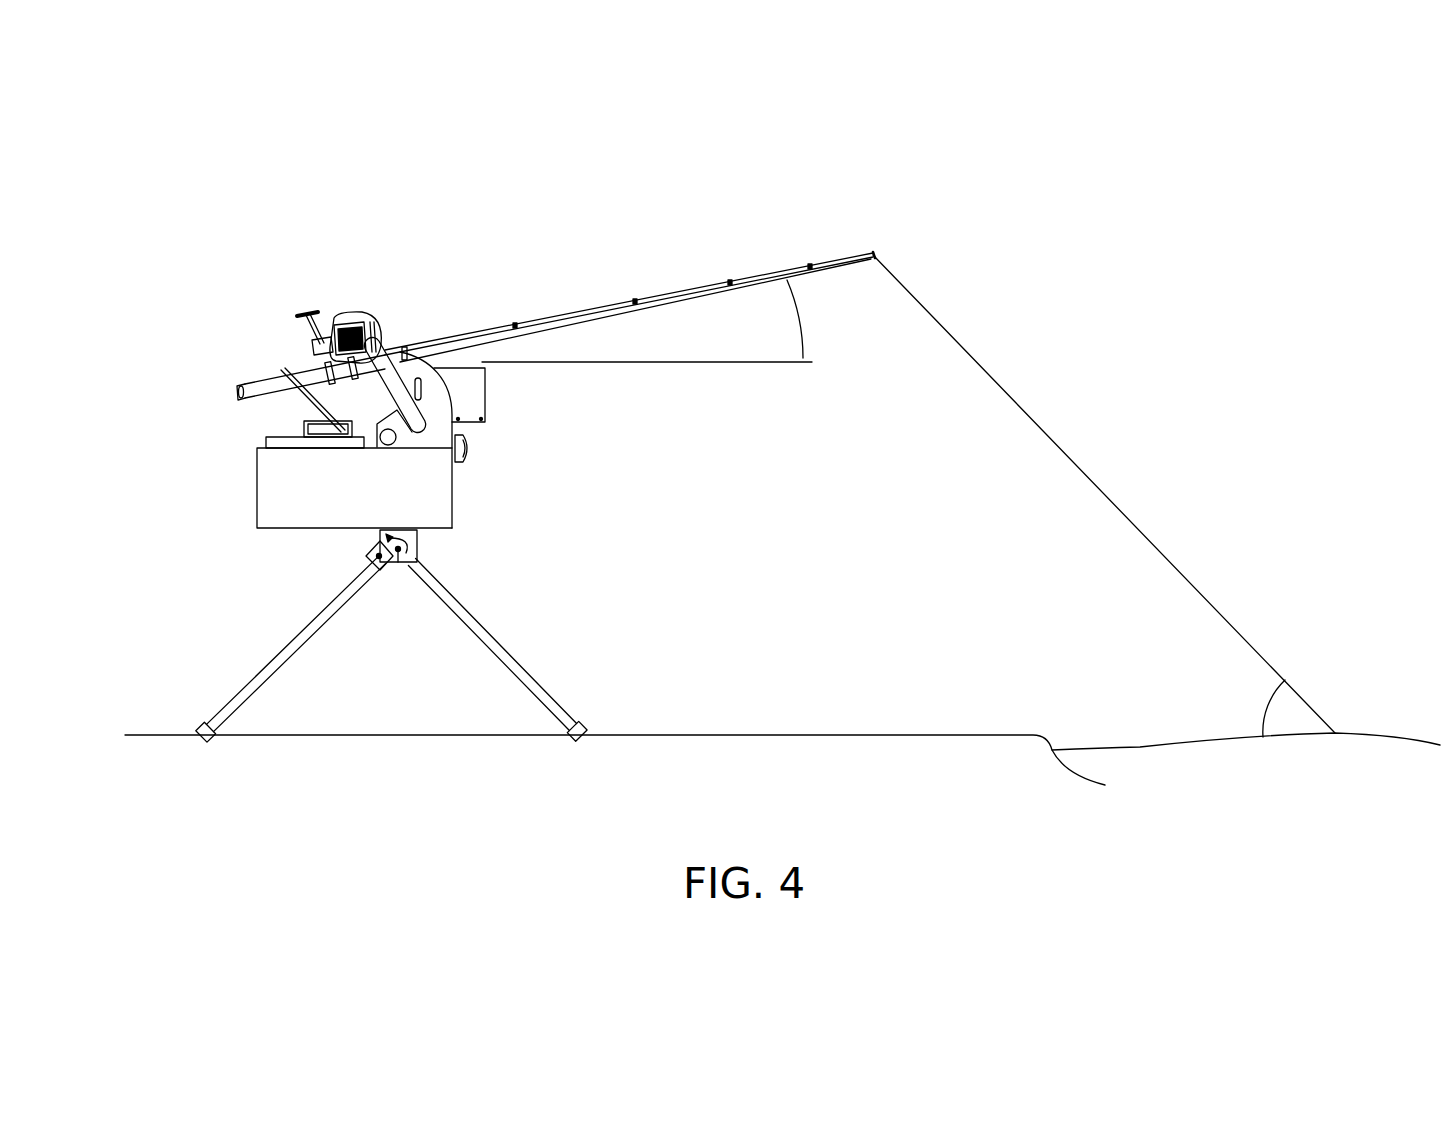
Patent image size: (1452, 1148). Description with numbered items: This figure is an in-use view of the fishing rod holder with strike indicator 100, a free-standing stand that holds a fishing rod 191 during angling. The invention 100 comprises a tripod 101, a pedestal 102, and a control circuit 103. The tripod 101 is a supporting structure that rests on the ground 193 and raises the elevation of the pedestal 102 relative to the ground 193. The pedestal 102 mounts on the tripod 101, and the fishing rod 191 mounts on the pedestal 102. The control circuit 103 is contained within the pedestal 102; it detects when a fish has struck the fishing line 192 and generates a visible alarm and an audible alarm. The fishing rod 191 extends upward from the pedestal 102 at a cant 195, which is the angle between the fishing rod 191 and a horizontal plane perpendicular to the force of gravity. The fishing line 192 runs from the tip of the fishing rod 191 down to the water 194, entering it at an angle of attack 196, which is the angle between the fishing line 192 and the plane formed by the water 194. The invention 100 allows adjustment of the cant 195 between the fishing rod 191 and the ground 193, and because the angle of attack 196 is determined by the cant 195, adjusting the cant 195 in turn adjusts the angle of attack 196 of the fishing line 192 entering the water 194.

The fishing rod holder with strike indicator 100 is at (349, 186).
The tripod 101 is at (292, 640).
The pedestal 102 is at (280, 476).
The control circuit 103 is at (470, 393).
The fishing rod 191 is at (767, 270).
The fishing line 192 is at (938, 318).
The ground 193 is at (976, 735).
The water 194 is at (1390, 737).
The cant 195 is at (810, 322).
The angle of attack 196 is at (1267, 707).